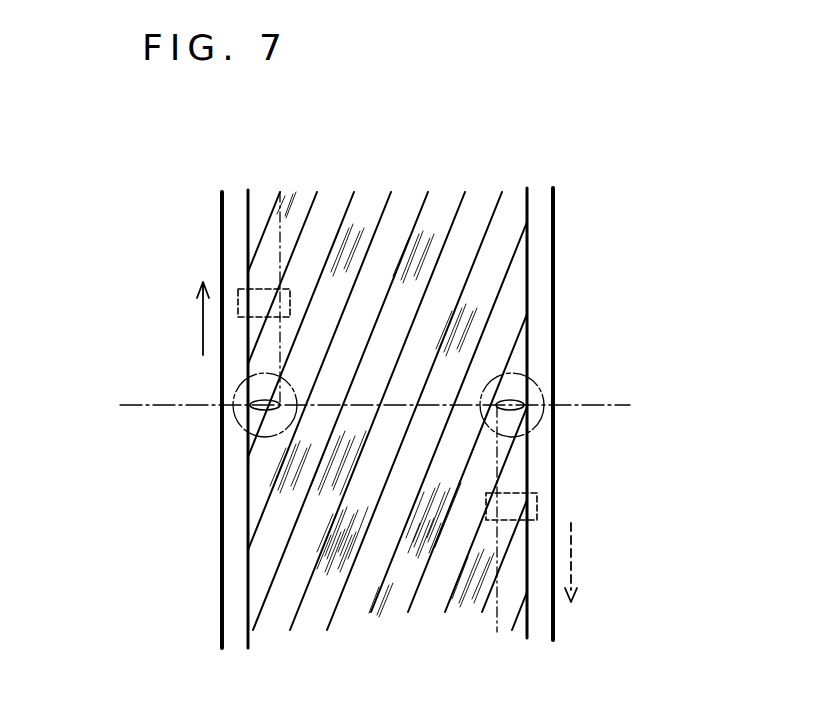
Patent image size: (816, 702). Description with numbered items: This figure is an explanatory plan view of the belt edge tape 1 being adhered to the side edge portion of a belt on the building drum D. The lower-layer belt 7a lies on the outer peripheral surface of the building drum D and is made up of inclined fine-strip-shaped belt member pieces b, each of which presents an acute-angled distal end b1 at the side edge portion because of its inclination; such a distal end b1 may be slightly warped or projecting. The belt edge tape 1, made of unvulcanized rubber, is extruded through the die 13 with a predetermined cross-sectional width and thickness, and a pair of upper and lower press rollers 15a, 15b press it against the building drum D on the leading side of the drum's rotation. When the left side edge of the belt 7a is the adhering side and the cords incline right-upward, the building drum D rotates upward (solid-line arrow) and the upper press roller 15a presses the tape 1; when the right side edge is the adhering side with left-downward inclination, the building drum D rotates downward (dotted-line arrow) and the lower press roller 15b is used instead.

The belt edge tape 1 is at (402, 385).
The belt 7a is at (508, 328).
The die 13 is at (535, 387).
The upper press roller 15a is at (243, 297).
The lower press roller 15b is at (545, 505).
The building drum D is at (556, 247).
The fine-strip-shaped belt member piece b is at (331, 427).
The acute-angled distal end b1 is at (252, 606).